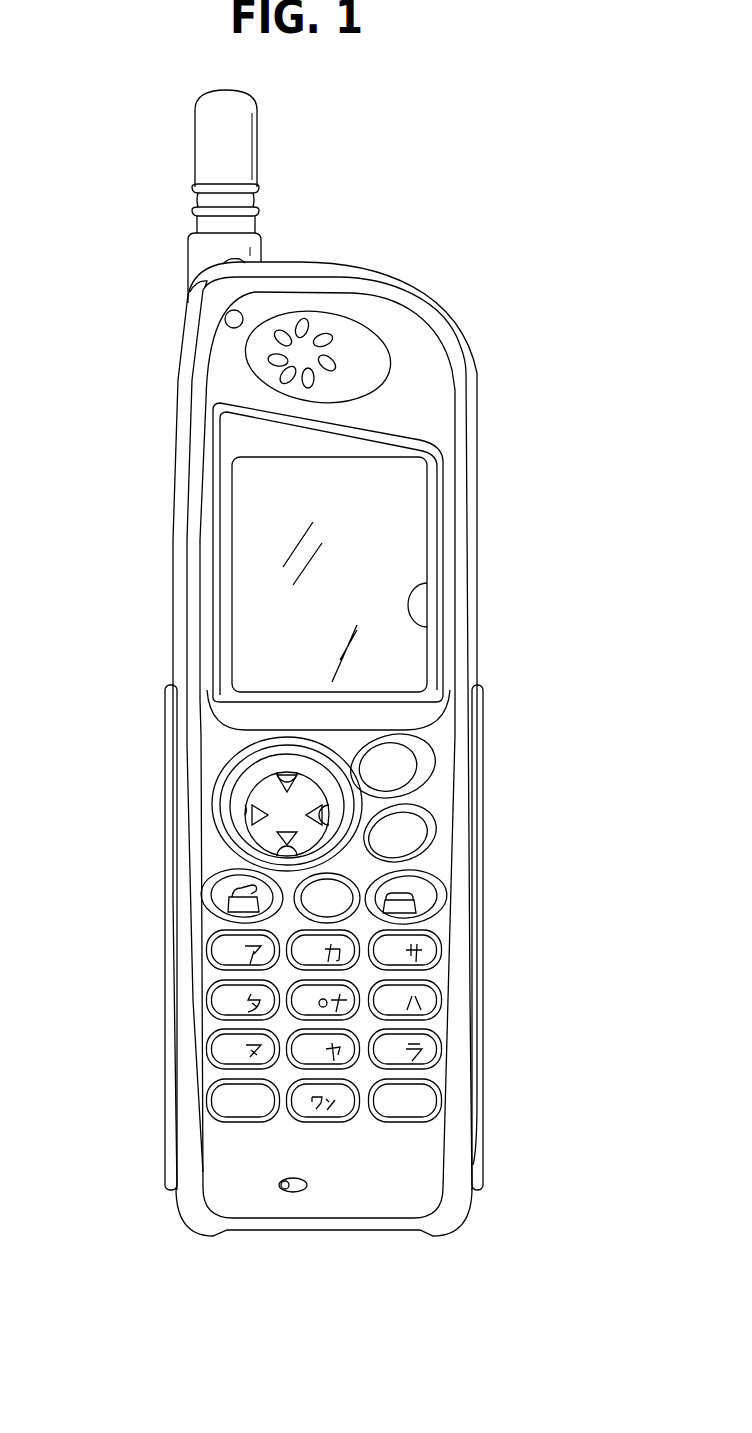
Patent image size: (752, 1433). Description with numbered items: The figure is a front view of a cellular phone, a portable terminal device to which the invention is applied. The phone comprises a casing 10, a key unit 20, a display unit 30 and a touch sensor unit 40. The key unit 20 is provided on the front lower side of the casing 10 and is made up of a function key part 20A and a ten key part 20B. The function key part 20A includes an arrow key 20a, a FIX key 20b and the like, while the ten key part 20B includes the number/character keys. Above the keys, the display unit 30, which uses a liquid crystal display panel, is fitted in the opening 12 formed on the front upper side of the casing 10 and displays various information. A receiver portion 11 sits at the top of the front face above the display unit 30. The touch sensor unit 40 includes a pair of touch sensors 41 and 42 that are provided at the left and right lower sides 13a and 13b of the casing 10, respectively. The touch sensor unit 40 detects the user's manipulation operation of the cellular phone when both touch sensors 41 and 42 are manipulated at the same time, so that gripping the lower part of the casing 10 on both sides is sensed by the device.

The casing 10 is at (391, 663).
The receiver (speaker) portion 11 is at (413, 380).
The opening 12 is at (428, 623).
The left lower side 13a is at (173, 656).
The right lower side 13b is at (479, 658).
The key unit 20 is at (412, 1026).
The arrow key 20a is at (203, 802).
The FIX key 20b is at (300, 888).
The function key part 20A is at (477, 789).
The ten key part 20B is at (360, 1027).
The display unit 30 is at (409, 552).
The touch sensor unit 40 is at (391, 986).
The touch sensor 41 is at (538, 959).
The touch sensor 42 is at (361, 986).